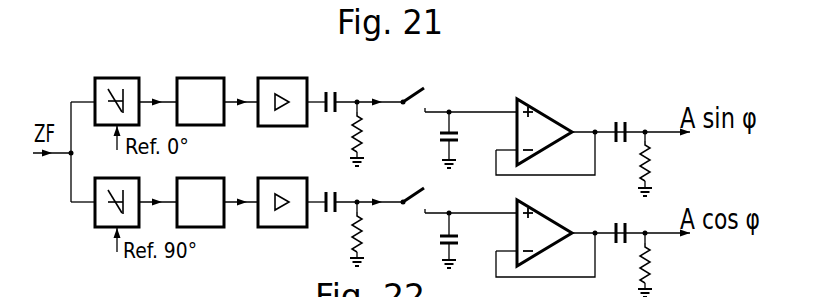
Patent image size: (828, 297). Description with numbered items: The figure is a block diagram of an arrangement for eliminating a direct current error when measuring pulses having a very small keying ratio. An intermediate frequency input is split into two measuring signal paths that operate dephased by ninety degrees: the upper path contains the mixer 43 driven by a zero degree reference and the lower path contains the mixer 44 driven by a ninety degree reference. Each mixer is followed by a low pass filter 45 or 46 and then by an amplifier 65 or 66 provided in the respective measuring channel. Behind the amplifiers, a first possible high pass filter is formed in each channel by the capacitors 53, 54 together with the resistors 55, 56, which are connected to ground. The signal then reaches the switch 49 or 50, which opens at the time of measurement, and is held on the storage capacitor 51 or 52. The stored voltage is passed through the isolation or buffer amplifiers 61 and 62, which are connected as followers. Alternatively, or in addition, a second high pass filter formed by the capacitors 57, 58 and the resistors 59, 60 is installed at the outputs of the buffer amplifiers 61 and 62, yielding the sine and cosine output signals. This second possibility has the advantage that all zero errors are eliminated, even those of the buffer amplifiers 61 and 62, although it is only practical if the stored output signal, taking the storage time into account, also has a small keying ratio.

The mixer 43 is at (110, 77).
The mixer 44 is at (94, 219).
The low pass filter 45 is at (197, 77).
The low pass filter 46 is at (197, 177).
The amplifier 65 is at (282, 77).
The amplifier 66 is at (270, 177).
The capacitor 53 is at (333, 90).
The capacitor 54 is at (333, 194).
The resistor 55 is at (371, 134).
The resistor 56 is at (371, 234).
The switch 49 is at (427, 89).
The switch 50 is at (428, 195).
The storage capacitor 51 is at (460, 140).
The storage capacitor 52 is at (460, 240).
The buffer amplifier 61 is at (541, 112).
The buffer amplifier 62 is at (541, 219).
The capacitor 57 is at (619, 118).
The capacitor 58 is at (624, 229).
The resistor 59 is at (658, 164).
The resistor 60 is at (658, 265).